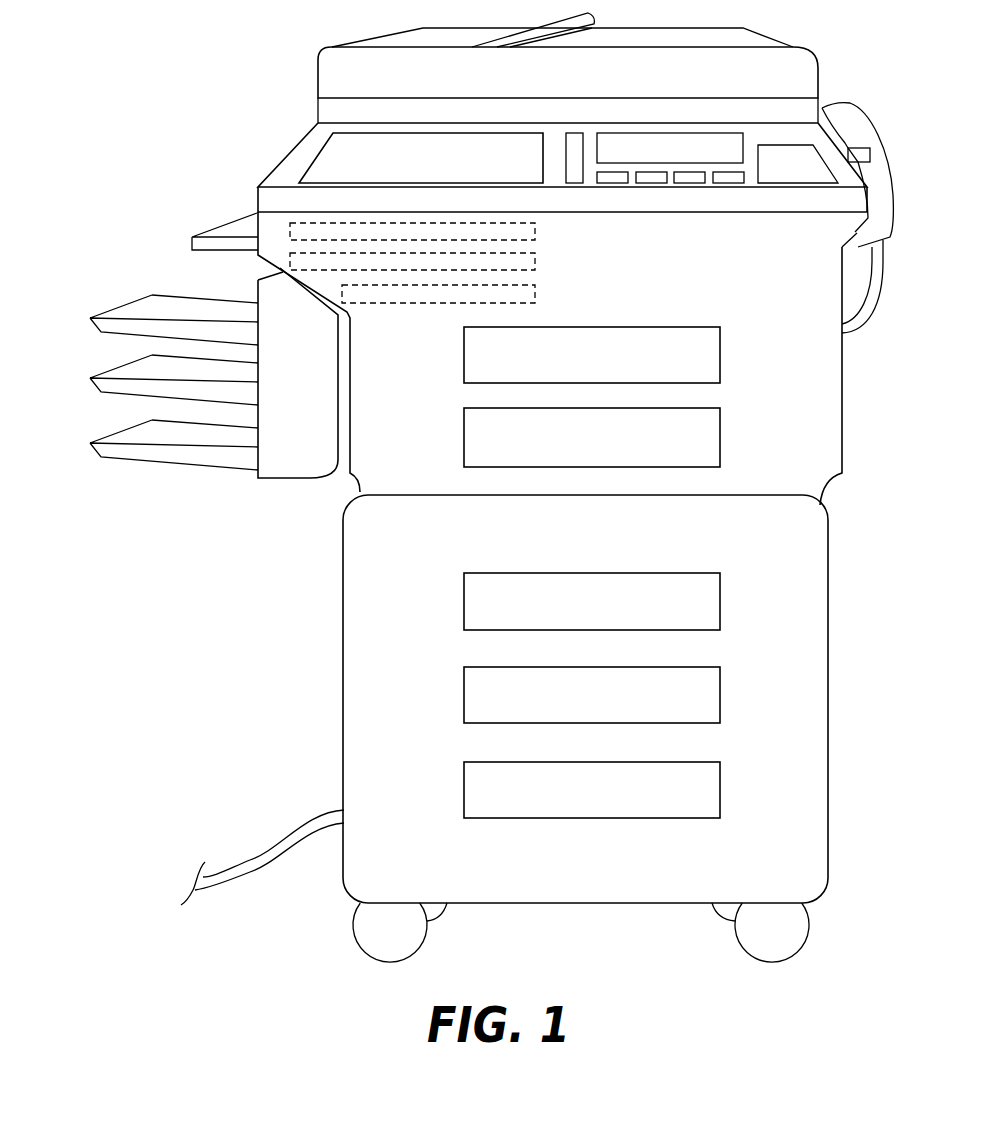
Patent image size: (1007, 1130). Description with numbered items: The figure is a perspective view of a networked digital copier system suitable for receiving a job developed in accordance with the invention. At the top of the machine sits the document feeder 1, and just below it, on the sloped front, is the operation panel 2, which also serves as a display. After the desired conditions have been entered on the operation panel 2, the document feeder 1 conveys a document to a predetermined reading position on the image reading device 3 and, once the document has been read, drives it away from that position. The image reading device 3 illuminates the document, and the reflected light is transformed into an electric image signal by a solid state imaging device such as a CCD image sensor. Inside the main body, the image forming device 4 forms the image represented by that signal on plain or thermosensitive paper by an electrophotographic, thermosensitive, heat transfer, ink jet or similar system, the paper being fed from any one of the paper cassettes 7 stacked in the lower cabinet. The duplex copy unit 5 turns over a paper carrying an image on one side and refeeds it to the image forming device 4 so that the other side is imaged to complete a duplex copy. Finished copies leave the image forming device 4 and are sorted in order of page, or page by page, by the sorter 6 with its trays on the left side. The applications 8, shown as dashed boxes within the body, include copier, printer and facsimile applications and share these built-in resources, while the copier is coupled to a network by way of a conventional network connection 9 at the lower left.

The document feeder 1 is at (805, 58).
The operation panel 2 is at (333, 135).
The image reading device 3 is at (265, 162).
The image forming device 4 is at (713, 363).
The duplex copy unit 5 is at (713, 440).
The sorter 6 is at (162, 477).
The paper cassettes 7 is at (717, 600).
The applications 8 is at (542, 260).
The network connection 9 is at (237, 872).